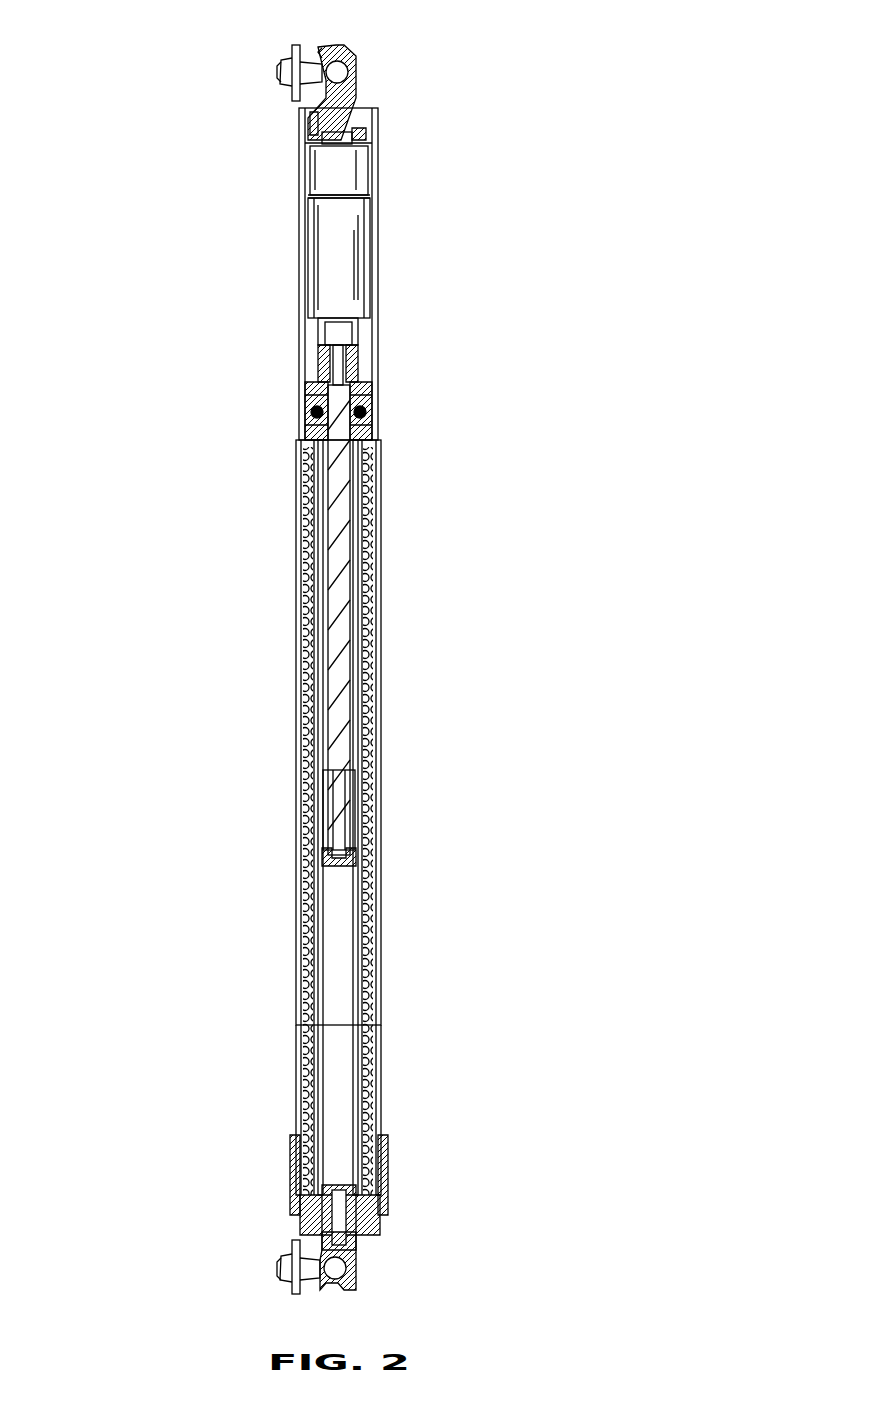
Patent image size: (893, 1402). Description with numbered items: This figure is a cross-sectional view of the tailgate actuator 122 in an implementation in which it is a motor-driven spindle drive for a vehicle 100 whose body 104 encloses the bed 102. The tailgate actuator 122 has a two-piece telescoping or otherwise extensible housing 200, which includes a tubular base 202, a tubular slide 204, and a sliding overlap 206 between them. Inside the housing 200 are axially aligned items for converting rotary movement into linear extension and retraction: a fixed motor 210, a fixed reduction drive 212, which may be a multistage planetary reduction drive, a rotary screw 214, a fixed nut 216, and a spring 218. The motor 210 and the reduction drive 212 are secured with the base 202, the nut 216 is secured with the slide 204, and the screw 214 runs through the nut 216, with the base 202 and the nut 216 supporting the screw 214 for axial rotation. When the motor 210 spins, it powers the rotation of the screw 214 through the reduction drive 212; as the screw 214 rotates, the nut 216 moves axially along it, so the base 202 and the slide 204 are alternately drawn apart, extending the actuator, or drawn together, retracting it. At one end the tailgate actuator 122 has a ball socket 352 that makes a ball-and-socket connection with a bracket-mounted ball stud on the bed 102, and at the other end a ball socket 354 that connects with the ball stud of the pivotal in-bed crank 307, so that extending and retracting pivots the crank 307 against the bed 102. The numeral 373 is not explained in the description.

The vehicle 100 is at (198, 56).
The bed 102 is at (291, 92).
The body 104 is at (294, 58).
The tailgate actuator 122 is at (377, 134).
The housing 200 is at (378, 168).
The tubular base 202 is at (378, 198).
The tubular slide 204 is at (377, 1130).
The sliding overlap 206 is at (378, 854).
The motor 210 is at (372, 268).
The reduction drive 212 is at (360, 330).
The rotary screw 214 is at (350, 762).
The nut 216 is at (364, 792).
The spring 218 is at (370, 826).
The crank 307 is at (291, 1256).
The ball socket 352 is at (347, 72).
The ball socket 354 is at (347, 1268).
The sensor 373 is at (365, 246).